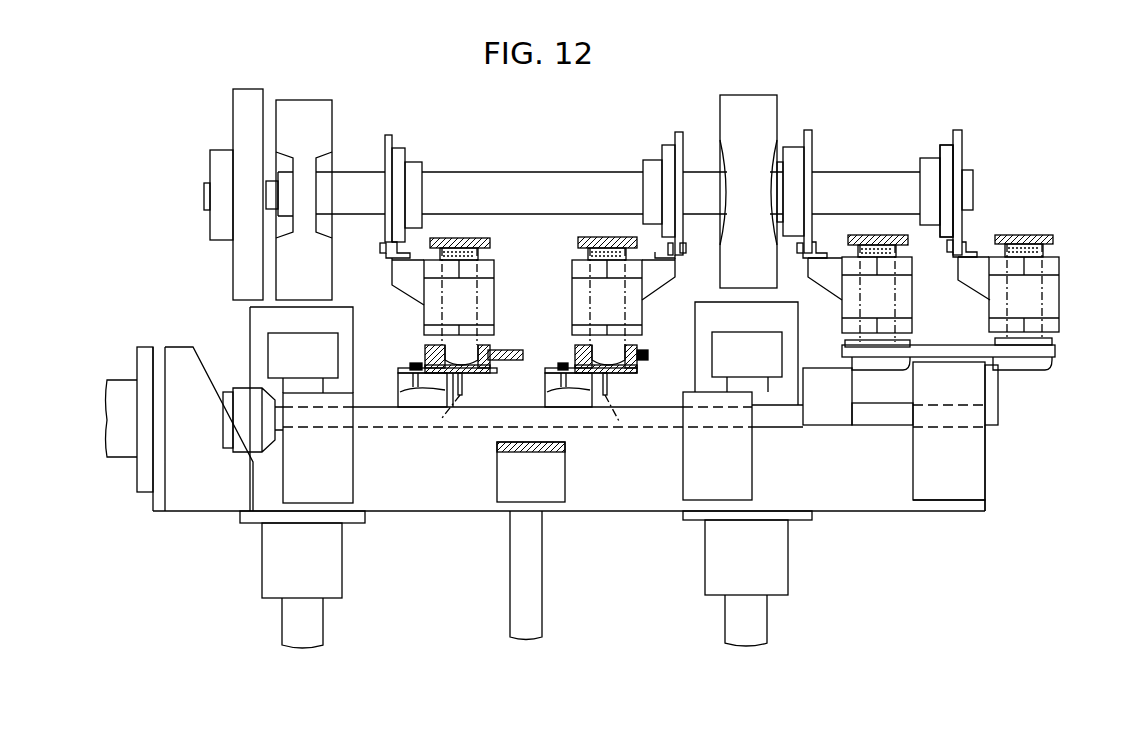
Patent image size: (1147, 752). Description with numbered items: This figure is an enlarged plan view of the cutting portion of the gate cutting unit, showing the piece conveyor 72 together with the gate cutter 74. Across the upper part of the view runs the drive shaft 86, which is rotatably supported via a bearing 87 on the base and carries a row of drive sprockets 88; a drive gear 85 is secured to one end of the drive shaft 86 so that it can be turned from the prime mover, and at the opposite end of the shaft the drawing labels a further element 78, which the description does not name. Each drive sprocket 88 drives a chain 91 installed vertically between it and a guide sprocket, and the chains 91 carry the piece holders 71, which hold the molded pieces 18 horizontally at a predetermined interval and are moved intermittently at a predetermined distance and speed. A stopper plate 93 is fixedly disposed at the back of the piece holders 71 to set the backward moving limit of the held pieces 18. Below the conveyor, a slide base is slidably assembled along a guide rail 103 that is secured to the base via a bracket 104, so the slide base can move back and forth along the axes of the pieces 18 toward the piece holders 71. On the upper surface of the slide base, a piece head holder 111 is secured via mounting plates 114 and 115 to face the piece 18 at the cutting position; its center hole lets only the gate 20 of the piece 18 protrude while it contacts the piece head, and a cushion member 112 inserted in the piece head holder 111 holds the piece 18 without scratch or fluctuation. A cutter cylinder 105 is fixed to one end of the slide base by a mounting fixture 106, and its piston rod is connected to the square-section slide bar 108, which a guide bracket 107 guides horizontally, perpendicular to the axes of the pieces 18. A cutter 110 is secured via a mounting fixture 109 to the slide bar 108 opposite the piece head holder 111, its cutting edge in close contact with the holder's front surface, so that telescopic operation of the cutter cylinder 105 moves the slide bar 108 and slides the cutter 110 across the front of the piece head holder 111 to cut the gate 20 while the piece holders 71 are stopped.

The piece 18 is at (480, 297).
The gate 20 is at (442, 418).
The piece holder 71 is at (494, 268).
The piece conveyor 72 is at (968, 126).
The gate cutter 74 is at (996, 474).
The collar 78 is at (963, 145).
The drive gear 85 is at (250, 93).
The drive shaft 86 is at (533, 175).
The bearing 87 is at (313, 100).
The drive sprocket 88 is at (391, 134).
The chain 91 is at (385, 254).
The stopper plate 93 is at (450, 238).
The guide rail 103 is at (322, 625).
The bracket 104 is at (272, 348).
The cutter cylinder 105 is at (116, 380).
The mounting fixture 106 is at (158, 512).
The guide bracket 107 is at (283, 490).
The slide bar 108 is at (660, 430).
The mounting fixture 109 is at (410, 400).
The cutter 110 is at (480, 370).
The piece head holder 111 is at (428, 345).
The cushion member 112 is at (490, 352).
The mounting plate 114 is at (960, 326).
The mounting plate 115 is at (975, 495).